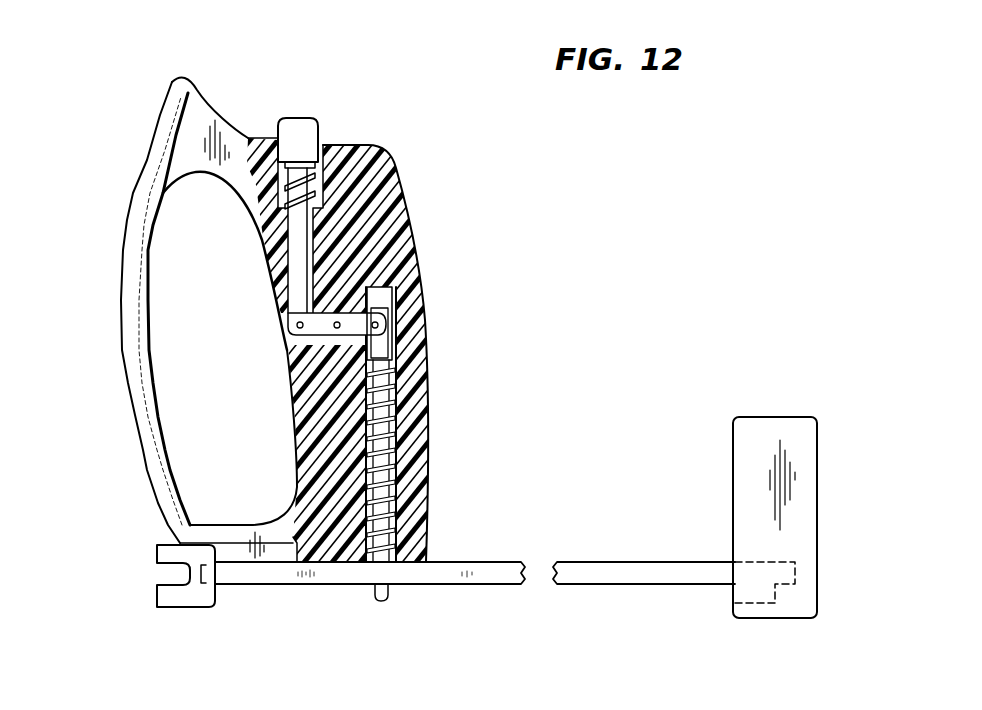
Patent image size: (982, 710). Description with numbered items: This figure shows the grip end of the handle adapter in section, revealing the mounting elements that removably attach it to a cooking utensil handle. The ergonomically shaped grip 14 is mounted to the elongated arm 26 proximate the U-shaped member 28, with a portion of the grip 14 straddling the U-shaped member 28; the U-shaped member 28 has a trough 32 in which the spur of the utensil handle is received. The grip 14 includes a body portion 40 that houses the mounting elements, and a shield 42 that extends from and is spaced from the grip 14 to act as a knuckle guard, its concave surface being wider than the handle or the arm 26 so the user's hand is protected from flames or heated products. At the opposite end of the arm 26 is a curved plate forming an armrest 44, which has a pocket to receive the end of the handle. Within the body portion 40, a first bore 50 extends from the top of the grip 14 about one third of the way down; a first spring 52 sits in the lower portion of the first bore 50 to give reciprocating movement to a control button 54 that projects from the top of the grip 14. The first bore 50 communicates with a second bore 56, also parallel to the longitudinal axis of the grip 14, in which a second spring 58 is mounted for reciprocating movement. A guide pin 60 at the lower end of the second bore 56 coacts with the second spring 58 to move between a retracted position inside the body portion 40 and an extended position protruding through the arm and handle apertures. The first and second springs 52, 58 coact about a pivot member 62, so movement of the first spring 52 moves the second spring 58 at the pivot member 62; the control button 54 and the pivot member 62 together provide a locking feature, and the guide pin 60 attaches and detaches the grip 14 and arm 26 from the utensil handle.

The grip 14 is at (305, 405).
The elongated arm 26 is at (575, 562).
The U-shaped member 28 is at (170, 552).
The trough 32 is at (175, 577).
The body portion 40 is at (412, 288).
The shield 42 is at (150, 188).
The armrest 44 is at (752, 497).
The first bore 50 is at (280, 274).
The first spring 52 is at (265, 140).
The control button 54 is at (322, 133).
The second bore 56 is at (392, 462).
The second spring 58 is at (403, 403).
The guide pin 60 is at (373, 618).
The pivot member 62 is at (337, 330).